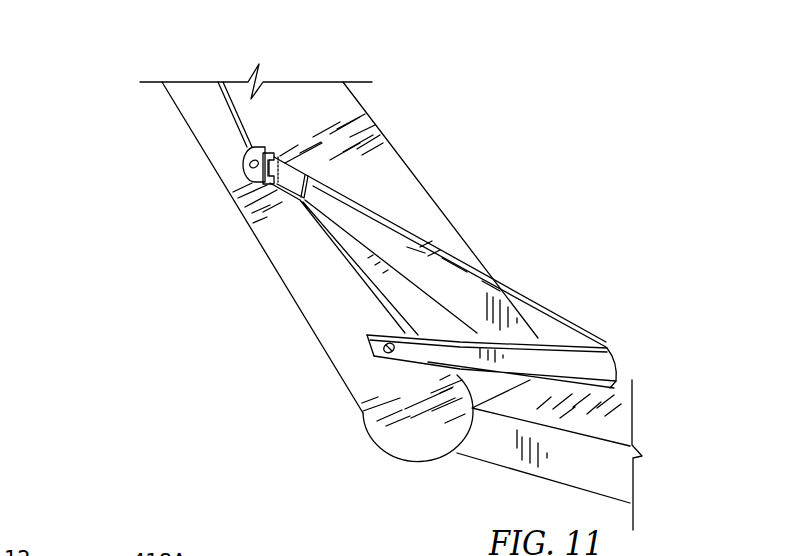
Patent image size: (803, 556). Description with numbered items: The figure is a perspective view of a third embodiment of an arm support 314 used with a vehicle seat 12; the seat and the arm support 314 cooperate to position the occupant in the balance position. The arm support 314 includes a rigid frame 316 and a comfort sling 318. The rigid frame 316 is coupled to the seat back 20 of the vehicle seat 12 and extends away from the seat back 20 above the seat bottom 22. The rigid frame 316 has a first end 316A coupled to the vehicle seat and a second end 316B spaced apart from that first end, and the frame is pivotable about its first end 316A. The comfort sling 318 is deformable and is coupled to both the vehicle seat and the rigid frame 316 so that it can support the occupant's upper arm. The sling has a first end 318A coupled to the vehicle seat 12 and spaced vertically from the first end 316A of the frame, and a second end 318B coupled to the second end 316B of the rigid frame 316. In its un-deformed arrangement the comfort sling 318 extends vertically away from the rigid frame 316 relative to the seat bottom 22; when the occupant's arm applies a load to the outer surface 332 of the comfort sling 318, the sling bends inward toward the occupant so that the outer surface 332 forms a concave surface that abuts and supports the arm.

The vehicle seat 12 is at (90, 72).
The seat back 20 is at (216, 122).
The seat bottom 22 is at (613, 428).
The arm support 314 is at (466, 158).
The rigid frame 316 is at (531, 364).
The first end of the rigid frame 316A is at (368, 349).
The second end of the rigid frame 316B is at (615, 367).
The comfort sling 318 is at (463, 303).
The first end of the comfort sling 318A is at (273, 166).
The second end of the comfort sling 318B is at (602, 344).
The outer surface 332 is at (407, 252).